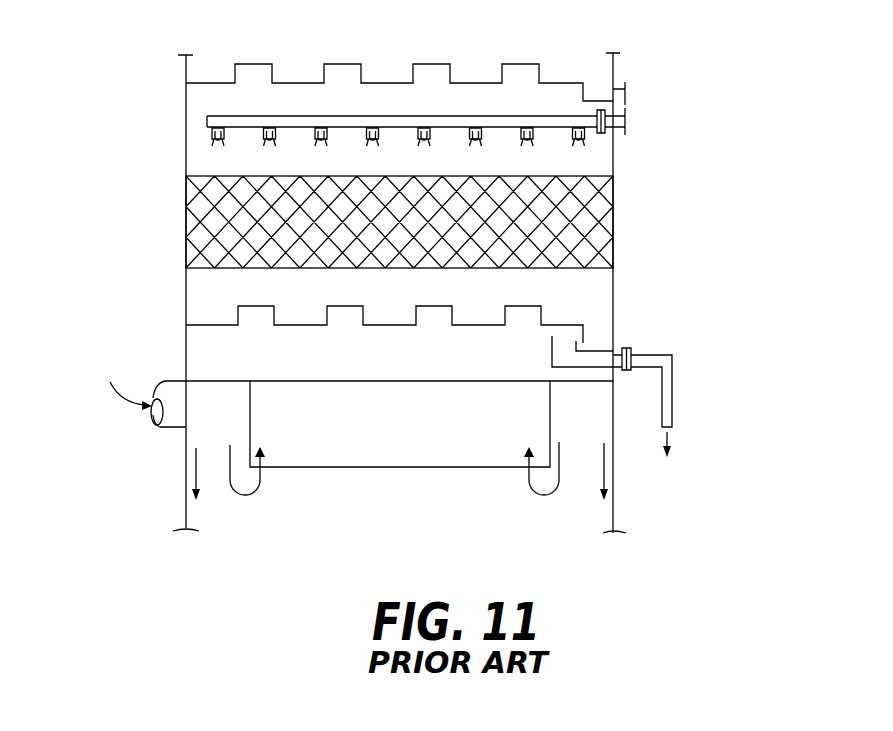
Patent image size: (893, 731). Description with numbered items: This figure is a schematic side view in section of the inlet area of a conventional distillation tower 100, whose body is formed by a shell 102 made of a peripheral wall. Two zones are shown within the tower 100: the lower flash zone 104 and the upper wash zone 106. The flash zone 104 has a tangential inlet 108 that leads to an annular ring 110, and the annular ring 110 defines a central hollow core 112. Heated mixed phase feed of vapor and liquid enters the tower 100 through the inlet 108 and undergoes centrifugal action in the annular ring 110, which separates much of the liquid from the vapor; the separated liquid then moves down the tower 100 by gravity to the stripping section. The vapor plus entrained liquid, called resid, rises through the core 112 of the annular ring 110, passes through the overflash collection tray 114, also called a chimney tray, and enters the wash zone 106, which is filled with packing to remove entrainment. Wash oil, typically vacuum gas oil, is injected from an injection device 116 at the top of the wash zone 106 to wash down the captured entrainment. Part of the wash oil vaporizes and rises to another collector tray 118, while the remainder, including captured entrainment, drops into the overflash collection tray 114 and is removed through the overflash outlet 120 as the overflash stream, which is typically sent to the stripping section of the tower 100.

The distillation tower 100 is at (146, 90).
The shell 102 is at (186, 160).
The flash zone 104 is at (434, 516).
The wash zone 106 is at (186, 225).
The tangential inlet 108 is at (170, 424).
The annular ring 110 is at (212, 380).
The central hollow core 112 is at (414, 432).
The overflash collection tray 114 is at (566, 323).
The injection device 116 is at (626, 125).
The collector tray 118 is at (578, 80).
The overflash outlet 120 is at (673, 402).